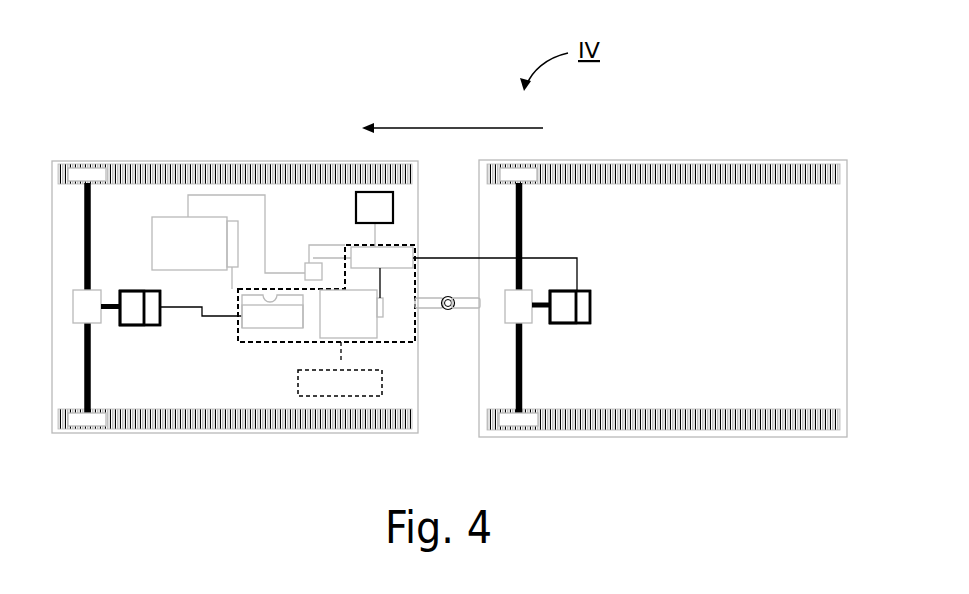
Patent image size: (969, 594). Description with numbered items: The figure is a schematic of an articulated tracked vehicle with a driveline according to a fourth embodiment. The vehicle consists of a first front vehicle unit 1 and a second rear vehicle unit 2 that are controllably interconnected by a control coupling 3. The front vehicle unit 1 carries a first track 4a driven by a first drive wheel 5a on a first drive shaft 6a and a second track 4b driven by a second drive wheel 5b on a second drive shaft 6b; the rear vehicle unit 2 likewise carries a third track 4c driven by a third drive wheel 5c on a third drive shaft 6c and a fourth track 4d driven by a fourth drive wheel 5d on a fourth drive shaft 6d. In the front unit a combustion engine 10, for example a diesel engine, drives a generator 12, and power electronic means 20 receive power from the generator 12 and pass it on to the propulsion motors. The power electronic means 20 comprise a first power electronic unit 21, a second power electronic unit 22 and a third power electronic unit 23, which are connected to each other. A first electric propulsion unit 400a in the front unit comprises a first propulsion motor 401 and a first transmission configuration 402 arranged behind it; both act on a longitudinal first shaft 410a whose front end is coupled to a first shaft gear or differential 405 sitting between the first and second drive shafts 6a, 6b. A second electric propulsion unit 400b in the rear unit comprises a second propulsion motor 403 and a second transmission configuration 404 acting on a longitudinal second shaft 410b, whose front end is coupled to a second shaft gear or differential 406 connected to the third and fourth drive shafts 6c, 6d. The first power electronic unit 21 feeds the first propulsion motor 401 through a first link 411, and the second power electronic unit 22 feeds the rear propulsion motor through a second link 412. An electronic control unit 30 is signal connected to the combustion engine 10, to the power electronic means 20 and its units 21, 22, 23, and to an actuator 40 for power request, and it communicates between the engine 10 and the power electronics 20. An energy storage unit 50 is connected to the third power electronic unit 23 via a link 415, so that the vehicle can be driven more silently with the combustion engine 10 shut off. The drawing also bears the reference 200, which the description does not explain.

The first front vehicle unit 1 is at (275, 152).
The second rear vehicle unit 2 is at (704, 150).
The control coupling 3 is at (457, 319).
The first track 4a is at (232, 170).
The second track 4b is at (268, 415).
The third track 4c is at (800, 173).
The fourth track 4d is at (710, 418).
The first drive wheel 5a is at (88, 172).
The second drive wheel 5b is at (90, 423).
The third drive wheel 5c is at (523, 174).
The fourth drive wheel 5d is at (520, 418).
The first drive shaft 6a is at (122, 178).
The second drive shaft 6b is at (88, 392).
The third drive shaft 6c is at (523, 200).
The fourth drive shaft 6d is at (520, 387).
The combustion engine 10 is at (189, 243).
The generator 12 is at (232, 228).
The power electronic means 20 is at (250, 342).
The first power electronic unit 21 is at (272, 313).
The second power electronic unit 22 is at (382, 246).
The third power electronic unit 23 is at (351, 303).
The electronic control unit 30 is at (312, 276).
The actuator for power request 40 is at (374, 207).
The energy storage unit 50 is at (340, 384).
The data connection 200 is at (265, 203).
The first electric propulsion unit 400a is at (131, 332).
The second electric propulsion unit 400b is at (570, 331).
The first propulsion motor 401 is at (155, 323).
The first transmission configuration 402 is at (128, 297).
The second propulsion motor 403 is at (583, 296).
The second transmission configuration 404 is at (557, 323).
The first shaft gear/differential 405 is at (83, 307).
The second shaft gear/differential 406 is at (526, 299).
The first shaft 410a is at (113, 304).
The second shaft 410b is at (545, 308).
The first link 411 is at (185, 310).
The second link 412 is at (452, 258).
The link 415 is at (341, 363).